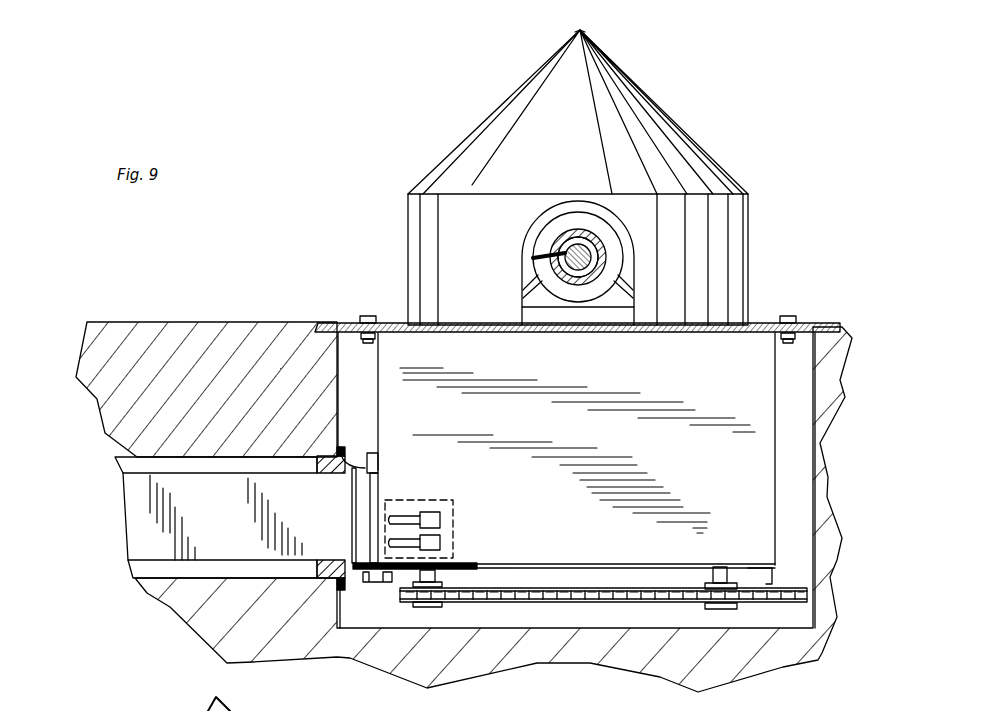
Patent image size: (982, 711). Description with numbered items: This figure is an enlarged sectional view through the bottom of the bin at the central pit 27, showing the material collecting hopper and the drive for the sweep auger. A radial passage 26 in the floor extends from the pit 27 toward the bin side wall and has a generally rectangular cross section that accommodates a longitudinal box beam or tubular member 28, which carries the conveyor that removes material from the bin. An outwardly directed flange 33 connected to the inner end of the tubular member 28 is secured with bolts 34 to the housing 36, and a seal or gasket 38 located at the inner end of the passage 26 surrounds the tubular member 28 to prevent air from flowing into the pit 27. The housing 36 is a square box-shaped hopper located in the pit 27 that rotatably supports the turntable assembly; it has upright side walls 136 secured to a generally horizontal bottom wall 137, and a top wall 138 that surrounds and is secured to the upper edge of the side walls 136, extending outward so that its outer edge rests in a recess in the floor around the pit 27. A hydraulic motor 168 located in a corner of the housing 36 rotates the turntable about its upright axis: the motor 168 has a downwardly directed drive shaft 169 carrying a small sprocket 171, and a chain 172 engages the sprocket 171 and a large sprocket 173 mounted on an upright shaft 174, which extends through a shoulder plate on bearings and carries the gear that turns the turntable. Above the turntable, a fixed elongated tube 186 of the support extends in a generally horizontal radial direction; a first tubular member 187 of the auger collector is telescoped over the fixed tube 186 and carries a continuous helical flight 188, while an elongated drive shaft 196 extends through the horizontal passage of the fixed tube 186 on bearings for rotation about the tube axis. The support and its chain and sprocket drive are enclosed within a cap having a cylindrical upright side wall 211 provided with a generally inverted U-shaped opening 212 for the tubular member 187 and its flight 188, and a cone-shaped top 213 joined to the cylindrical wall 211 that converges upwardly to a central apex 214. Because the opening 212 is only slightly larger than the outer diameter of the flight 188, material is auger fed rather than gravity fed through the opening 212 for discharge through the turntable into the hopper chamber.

The radial passage 26 is at (130, 460).
The central pit 27 is at (793, 477).
The tubular member 28 is at (165, 537).
The outwardly directed flange 33 is at (373, 473).
The bolts 34 is at (343, 440).
The housing 36 is at (740, 362).
The seal or gasket 38 is at (372, 480).
The upright side walls 136 is at (612, 538).
The bottom wall 137 is at (472, 560).
The top wall 138 is at (345, 322).
The hydraulic motor 168 is at (452, 503).
The drive shaft 169 is at (442, 577).
The small sprocket 171 is at (426, 607).
The chain 172 is at (535, 606).
The large sprocket 173 is at (705, 606).
The upright shaft 174 is at (705, 572).
The fixed elongated tube 186 is at (566, 249).
The first tubular member 187 is at (606, 258).
The continuous helical flight 188 is at (612, 243).
The elongated drive shaft 196 is at (533, 258).
The cylindrical upright side wall 211 is at (440, 210).
The opening 212 is at (606, 212).
The cone-shaped top 213 is at (605, 88).
The apex 214 is at (578, 30).